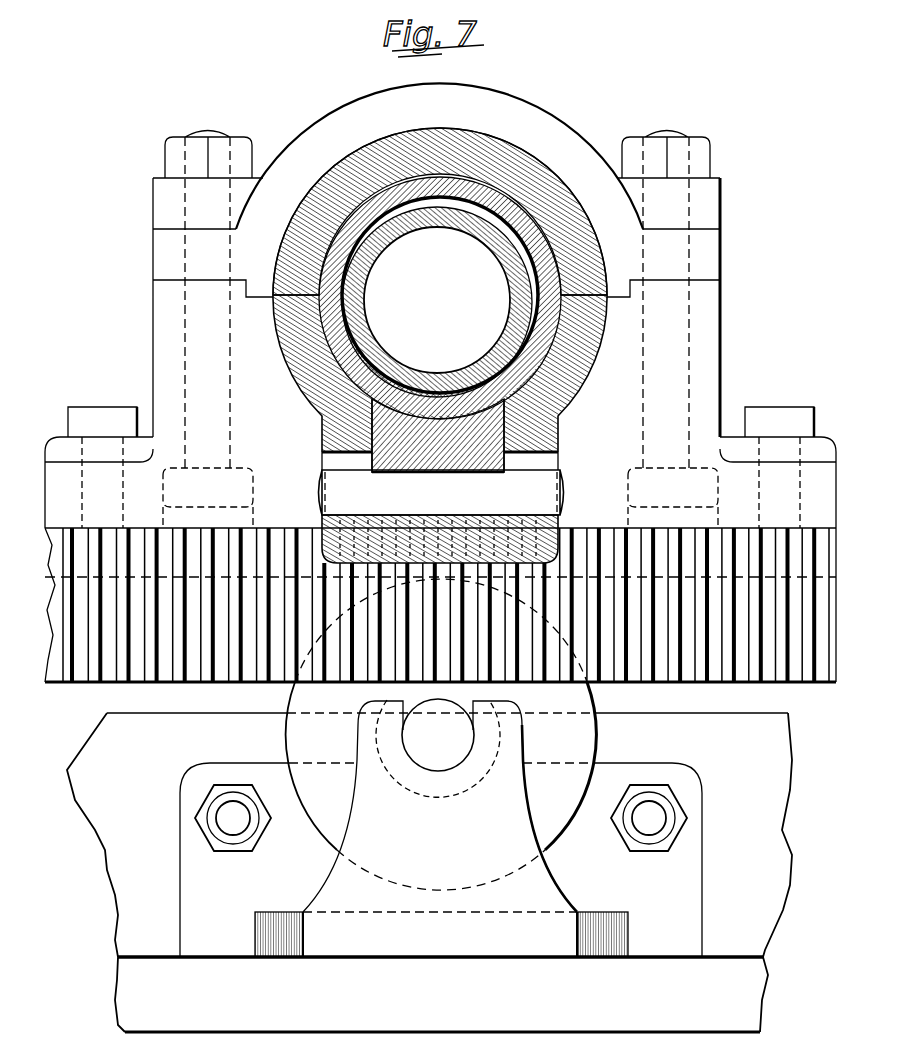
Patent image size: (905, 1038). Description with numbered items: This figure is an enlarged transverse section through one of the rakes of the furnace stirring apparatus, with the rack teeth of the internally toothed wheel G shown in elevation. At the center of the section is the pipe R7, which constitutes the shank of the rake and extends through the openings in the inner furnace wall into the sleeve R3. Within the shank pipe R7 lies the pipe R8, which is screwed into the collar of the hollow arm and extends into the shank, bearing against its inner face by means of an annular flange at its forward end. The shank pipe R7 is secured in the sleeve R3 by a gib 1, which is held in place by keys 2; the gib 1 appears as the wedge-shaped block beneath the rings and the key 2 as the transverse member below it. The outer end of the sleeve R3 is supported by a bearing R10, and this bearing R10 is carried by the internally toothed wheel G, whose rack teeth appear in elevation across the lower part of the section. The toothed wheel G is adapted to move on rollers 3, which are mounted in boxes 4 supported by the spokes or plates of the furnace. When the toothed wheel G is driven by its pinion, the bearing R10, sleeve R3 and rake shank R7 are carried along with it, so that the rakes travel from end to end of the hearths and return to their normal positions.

The sleeve R3 is at (580, 390).
The bearing R10 is at (431, 382).
The pipe or shank of rake R7 is at (343, 293).
The pipe R8 is at (512, 318).
The gib 1 is at (447, 453).
The keys 2 is at (441, 492).
The rollers 3 is at (598, 728).
The boxes 4 is at (441, 828).
The internally toothed wheel G is at (95, 682).